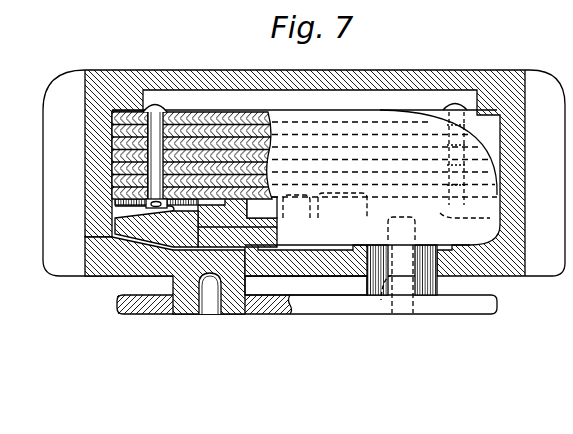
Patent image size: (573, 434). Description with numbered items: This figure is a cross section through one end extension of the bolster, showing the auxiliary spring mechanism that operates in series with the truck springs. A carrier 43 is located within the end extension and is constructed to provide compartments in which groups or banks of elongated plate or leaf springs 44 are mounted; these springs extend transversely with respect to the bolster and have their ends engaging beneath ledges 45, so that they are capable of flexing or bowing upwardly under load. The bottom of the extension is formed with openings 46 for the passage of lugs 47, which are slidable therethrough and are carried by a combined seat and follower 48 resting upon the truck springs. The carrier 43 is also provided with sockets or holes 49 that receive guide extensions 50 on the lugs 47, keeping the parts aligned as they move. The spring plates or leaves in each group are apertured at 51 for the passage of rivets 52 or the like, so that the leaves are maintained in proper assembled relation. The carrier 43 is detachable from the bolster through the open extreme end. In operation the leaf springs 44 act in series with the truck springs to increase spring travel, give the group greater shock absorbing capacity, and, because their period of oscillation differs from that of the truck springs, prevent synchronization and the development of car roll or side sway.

The carrier 43 is at (155, 222).
The leaf springs 44 is at (274, 123).
The ledges 45 is at (133, 110).
The openings 46 is at (163, 267).
The lugs 47 is at (370, 283).
The combined seat and follower 48 is at (353, 308).
The sockets 49 is at (237, 222).
The guide extensions 50 is at (245, 229).
The apertures 51 is at (147, 147).
The rivets 52 is at (164, 106).